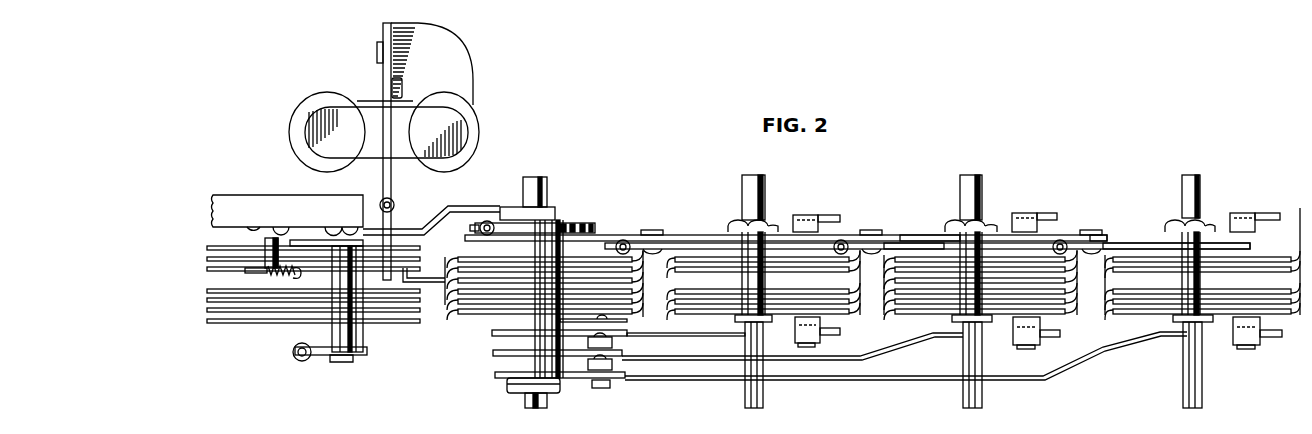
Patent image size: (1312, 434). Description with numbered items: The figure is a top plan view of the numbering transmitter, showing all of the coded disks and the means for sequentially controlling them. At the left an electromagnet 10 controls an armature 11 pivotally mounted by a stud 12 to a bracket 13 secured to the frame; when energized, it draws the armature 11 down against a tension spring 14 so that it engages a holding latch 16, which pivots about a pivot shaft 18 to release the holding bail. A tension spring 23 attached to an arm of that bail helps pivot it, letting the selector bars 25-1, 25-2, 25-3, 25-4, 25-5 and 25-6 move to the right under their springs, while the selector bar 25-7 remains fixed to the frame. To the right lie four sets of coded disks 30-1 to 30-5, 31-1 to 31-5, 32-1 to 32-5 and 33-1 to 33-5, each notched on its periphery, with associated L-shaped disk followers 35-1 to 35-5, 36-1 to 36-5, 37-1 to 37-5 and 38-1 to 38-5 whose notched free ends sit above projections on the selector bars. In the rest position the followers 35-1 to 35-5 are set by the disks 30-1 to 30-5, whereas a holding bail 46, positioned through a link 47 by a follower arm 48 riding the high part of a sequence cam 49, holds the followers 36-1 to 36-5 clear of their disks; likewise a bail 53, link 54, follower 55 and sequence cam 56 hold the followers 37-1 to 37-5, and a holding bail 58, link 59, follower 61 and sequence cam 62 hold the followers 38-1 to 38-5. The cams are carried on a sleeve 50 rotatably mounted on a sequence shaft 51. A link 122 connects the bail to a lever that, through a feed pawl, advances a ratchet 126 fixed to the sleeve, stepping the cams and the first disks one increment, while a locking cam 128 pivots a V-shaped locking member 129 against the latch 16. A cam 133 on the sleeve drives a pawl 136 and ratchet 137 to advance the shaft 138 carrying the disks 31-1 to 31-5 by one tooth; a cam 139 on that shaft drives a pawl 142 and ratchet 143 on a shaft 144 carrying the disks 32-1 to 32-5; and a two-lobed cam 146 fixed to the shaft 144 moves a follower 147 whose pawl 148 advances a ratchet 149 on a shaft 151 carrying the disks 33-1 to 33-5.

The electromagnet 10 is at (484, 129).
The armature 11 is at (391, 191).
The stud 12 is at (377, 52).
The bracket 13 is at (465, 62).
The tension spring 14 is at (394, 205).
The holding latch 16 is at (261, 273).
The pivot shaft 18 is at (264, 243).
The tension spring 23 is at (365, 357).
The selector bar 25-1 is at (208, 247).
The selector bar 25-2 is at (208, 259).
The selector bar 25-3 is at (208, 269).
The selector bar 25-4 is at (208, 291).
The selector bar 25-5 is at (208, 300).
The selector bar 25-6 is at (208, 310).
The selector bar 25-7 is at (208, 321).
The coded disks 30-1 to 30-5 is at (378, 296).
The coded disks 31-1 to 31-5 is at (668, 250).
The coded disks 32-1 to 32-5 is at (884, 255).
The coded disks 33-1 to 33-5 is at (1105, 255).
The L-shaped disk followers 35-1 to 35-5 is at (642, 257).
The L-shaped disk followers 36-1 to 36-5 is at (860, 232).
The L-shaped disk followers 37-1 to 37-5 is at (1080, 232).
The L-shaped disk followers 38-1 to 38-5 is at (1300, 210).
The holding bail 46 is at (837, 322).
The link 47 is at (717, 334).
The follower arm 48 is at (623, 332).
The sequence cam 49 is at (493, 335).
The sleeve 50 is at (512, 365).
The sequence shaft 51 is at (544, 185).
The bail 53 is at (1052, 321).
The link 54 is at (877, 356).
The follower 55 is at (624, 354).
The sequence cam 56 is at (494, 356).
The holding bail 58 is at (1273, 321).
The link 59 is at (1012, 380).
The follower 61 is at (615, 379).
The sequence cam 62 is at (568, 377).
The link 122 is at (493, 205).
The ratchet 126 is at (568, 222).
The locking cam 128 is at (594, 282).
The locking member 129 is at (432, 279).
The cam 133 is at (597, 236).
The pawl 136 is at (703, 244).
The ratchet 137 is at (788, 237).
The shaft 138 is at (765, 182).
The cam 139 is at (722, 236).
The pawl 142 is at (902, 243).
The ratchet 143 is at (1007, 237).
The shaft 144 is at (982, 181).
The cam 146 is at (930, 235).
The follower 147 is at (1110, 235).
The pawl 148 is at (1135, 247).
The ratchet 149 is at (1237, 242).
The shaft 151 is at (1200, 181).